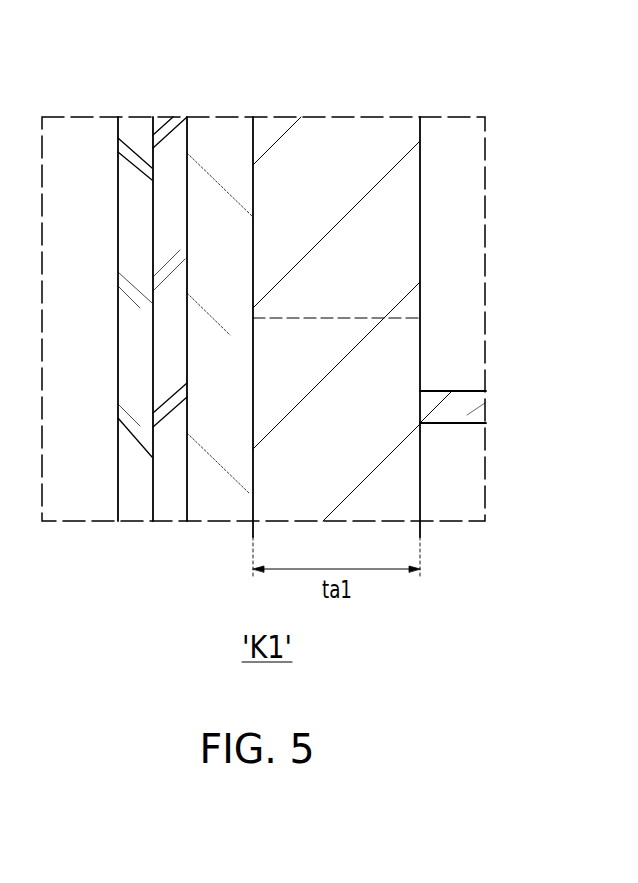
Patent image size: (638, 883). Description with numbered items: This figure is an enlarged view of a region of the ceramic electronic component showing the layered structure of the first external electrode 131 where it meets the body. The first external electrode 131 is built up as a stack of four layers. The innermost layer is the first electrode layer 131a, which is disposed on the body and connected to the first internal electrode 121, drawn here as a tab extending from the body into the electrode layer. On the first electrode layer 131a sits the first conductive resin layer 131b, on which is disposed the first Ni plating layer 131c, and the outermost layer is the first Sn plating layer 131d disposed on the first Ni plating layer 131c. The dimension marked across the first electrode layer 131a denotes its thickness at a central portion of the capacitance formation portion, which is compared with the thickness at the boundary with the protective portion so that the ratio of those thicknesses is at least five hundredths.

The first external electrode 131 is at (347, 45).
The first electrode layer 131a is at (337, 127).
The first conductive resin layer 131b is at (222, 127).
The first Ni plating layer 131c is at (172, 128).
The first Sn plating layer 131d is at (131, 127).
The first internal electrode 121 is at (481, 409).